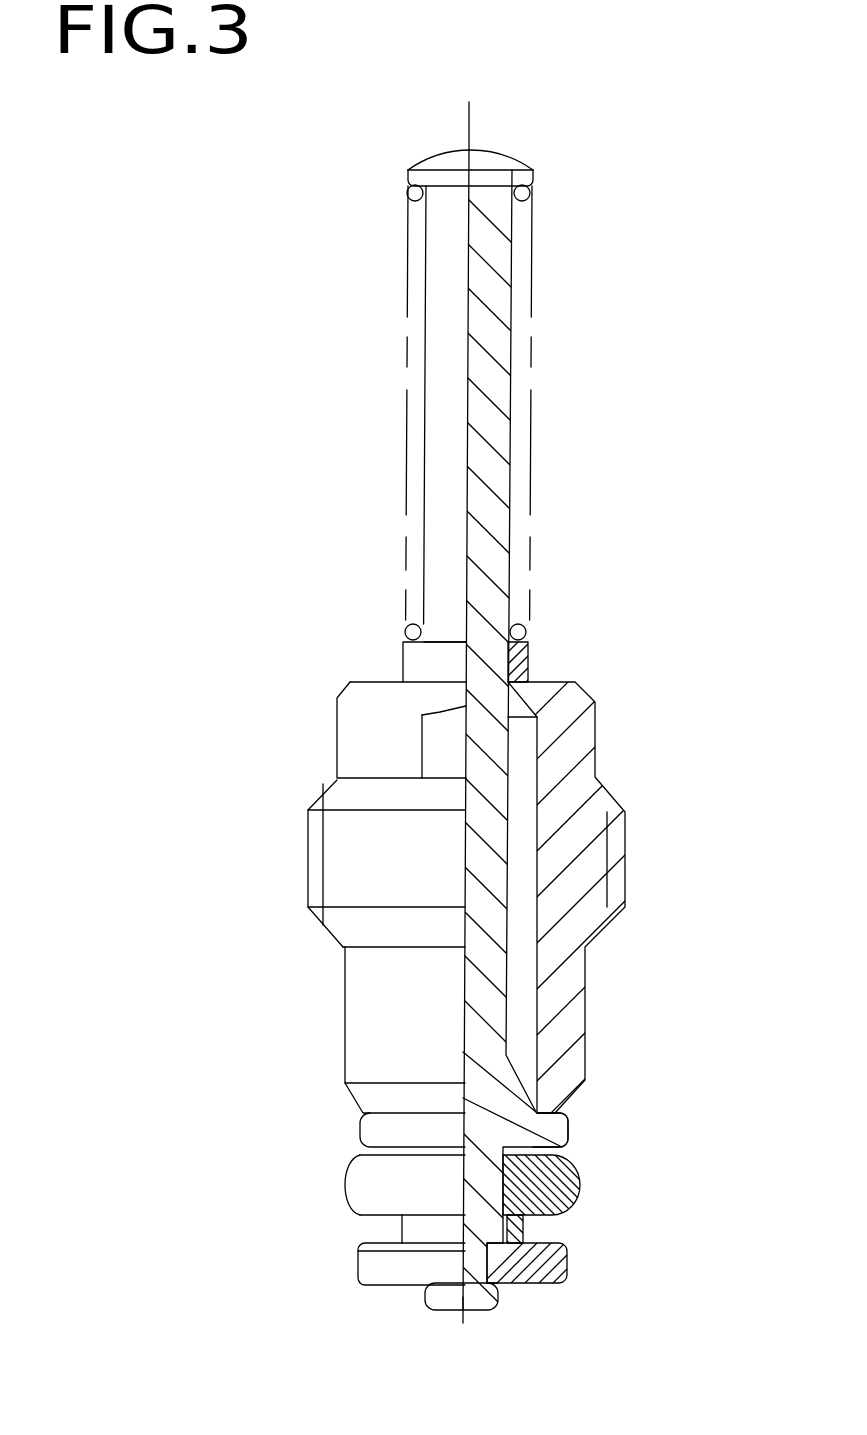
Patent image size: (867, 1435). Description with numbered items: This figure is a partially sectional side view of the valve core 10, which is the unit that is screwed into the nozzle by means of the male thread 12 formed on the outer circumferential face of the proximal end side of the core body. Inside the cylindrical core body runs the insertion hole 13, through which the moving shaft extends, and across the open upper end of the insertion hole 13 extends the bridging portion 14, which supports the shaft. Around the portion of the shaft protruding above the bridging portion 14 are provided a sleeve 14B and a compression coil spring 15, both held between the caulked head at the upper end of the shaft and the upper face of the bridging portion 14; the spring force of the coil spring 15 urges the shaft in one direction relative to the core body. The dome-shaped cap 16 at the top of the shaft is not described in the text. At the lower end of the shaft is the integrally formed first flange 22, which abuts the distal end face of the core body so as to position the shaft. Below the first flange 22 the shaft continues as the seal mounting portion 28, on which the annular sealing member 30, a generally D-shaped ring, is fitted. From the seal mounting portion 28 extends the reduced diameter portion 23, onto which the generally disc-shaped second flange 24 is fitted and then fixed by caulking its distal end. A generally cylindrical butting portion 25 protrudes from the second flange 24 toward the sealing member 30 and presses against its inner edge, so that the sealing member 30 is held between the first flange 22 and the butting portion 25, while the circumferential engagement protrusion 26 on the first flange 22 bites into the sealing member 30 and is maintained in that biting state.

The valve core 10 is at (644, 418).
The male thread 12 is at (490, 338).
The insertion hole 13 is at (433, 772).
The bridging portion 14 is at (352, 715).
The sleeve 14B is at (420, 662).
The compression coil spring 15 is at (532, 198).
The cap 16 is at (492, 158).
The first flange 22 is at (552, 1115).
The reduced diameter portion 23 is at (473, 1267).
The second flange 24 is at (567, 1263).
The butting portion 25 is at (537, 1226).
The engagement protrusion 26 is at (565, 1148).
The seal mounting portion 28 is at (478, 1181).
The sealing member 30 is at (577, 1192).